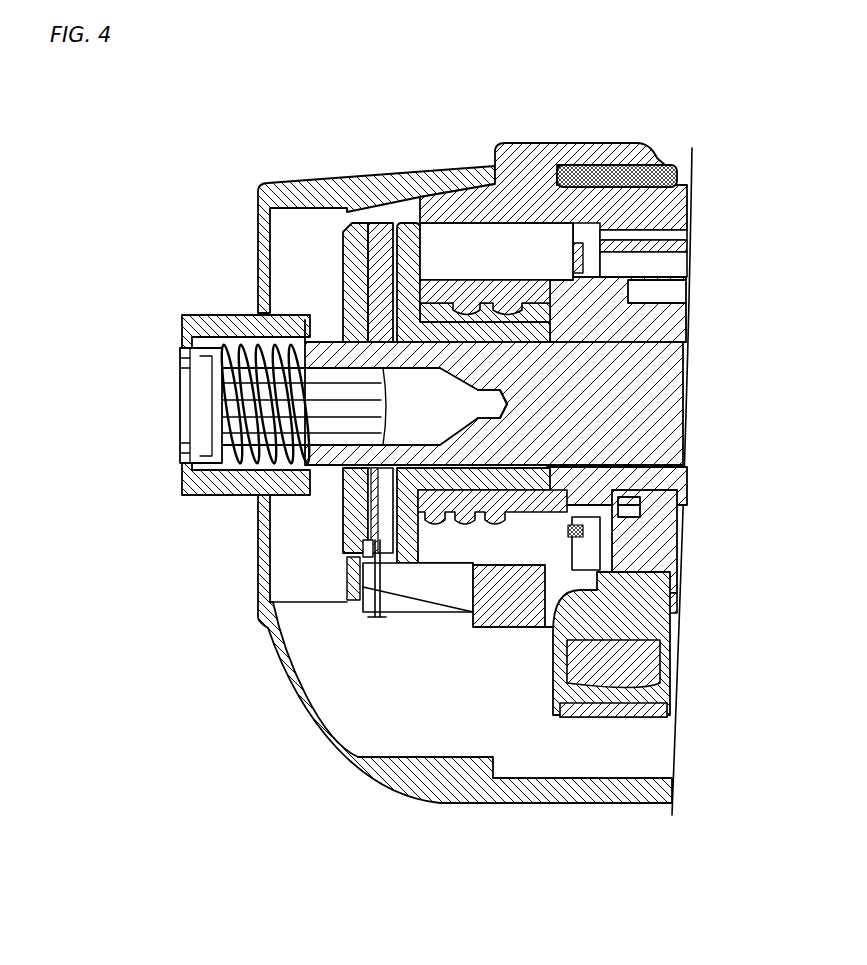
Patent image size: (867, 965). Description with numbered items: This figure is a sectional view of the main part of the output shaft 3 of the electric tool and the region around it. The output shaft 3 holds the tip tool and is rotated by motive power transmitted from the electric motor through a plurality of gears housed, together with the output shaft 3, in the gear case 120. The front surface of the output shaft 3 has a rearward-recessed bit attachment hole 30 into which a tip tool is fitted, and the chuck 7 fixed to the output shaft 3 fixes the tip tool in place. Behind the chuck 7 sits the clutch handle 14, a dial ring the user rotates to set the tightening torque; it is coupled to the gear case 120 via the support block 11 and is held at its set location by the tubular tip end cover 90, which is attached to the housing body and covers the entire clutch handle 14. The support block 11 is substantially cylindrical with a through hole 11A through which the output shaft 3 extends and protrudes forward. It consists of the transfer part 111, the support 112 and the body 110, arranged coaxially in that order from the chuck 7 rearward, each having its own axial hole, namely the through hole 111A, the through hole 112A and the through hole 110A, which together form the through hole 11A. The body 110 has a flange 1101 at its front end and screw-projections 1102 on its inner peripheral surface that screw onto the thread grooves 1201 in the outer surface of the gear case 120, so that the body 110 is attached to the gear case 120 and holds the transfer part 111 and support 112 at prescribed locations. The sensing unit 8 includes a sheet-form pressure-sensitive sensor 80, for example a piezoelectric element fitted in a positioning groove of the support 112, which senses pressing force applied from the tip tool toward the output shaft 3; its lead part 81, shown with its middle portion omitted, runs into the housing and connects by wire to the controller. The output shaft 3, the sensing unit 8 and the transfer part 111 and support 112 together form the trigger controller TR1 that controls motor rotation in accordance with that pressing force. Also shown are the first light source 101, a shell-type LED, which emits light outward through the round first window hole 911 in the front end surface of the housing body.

The output shaft 3 is at (670, 405).
The chuck 7 is at (220, 487).
The sensing unit 8 is at (372, 608).
The support block 11 is at (463, 122).
The through hole 11A is at (337, 330).
The clutch handle 14 is at (502, 190).
The bit attachment hole 30 is at (185, 372).
The pressure-sensitive sensor 80 is at (368, 530).
The lead part 81 is at (382, 572).
The tip end cover 90 is at (598, 793).
The first light source 101 is at (627, 712).
The body 110 is at (417, 227).
The through hole 110A is at (403, 465).
The transfer part 111 is at (360, 227).
The through hole 111A is at (342, 466).
The support 112 is at (380, 230).
The through hole 112A is at (345, 302).
The gear case 120 is at (673, 323).
The first window hole 911 is at (558, 682).
The flange 1101 is at (412, 262).
The screw-projections 1102 is at (508, 307).
The thread grooves 1201 is at (450, 388).
The trigger controller TR1 is at (203, 312).